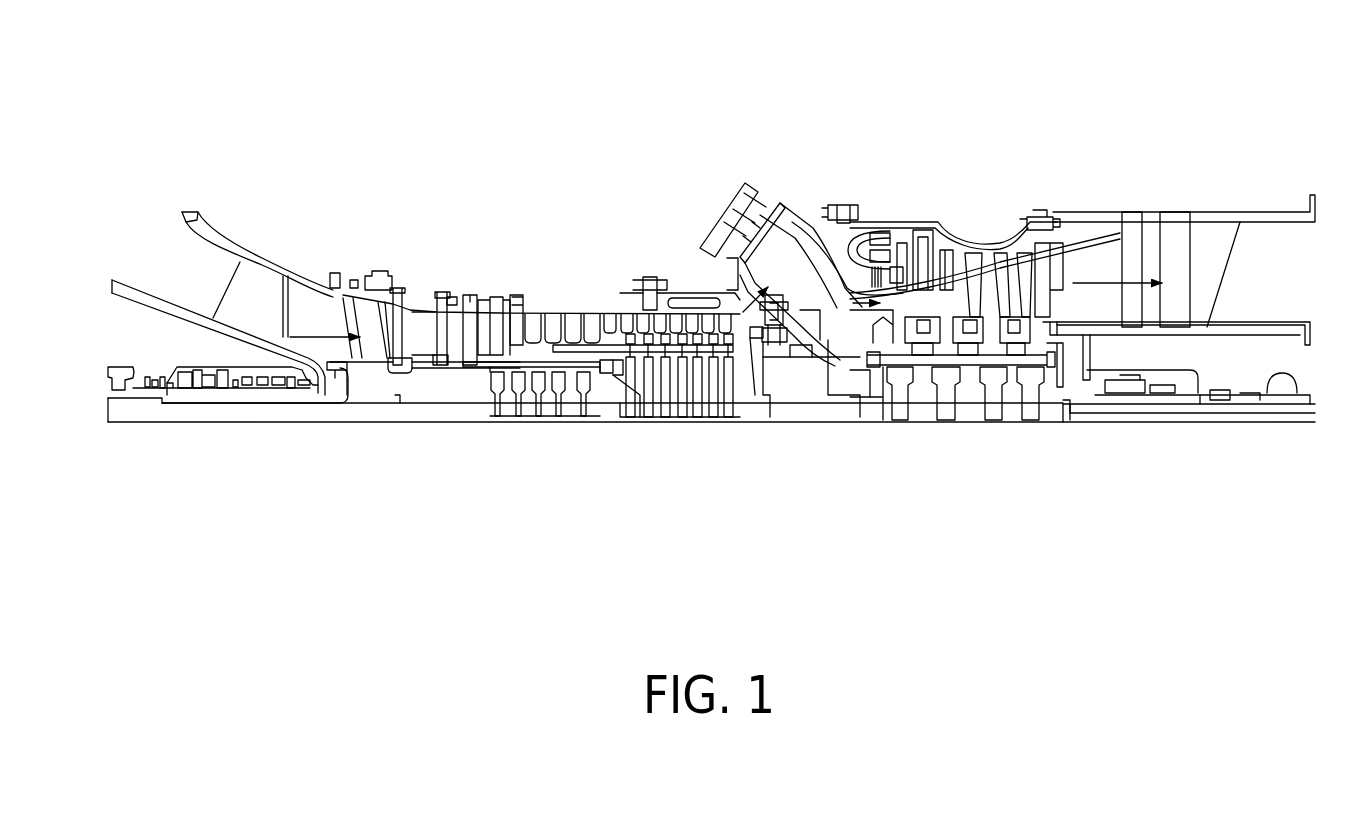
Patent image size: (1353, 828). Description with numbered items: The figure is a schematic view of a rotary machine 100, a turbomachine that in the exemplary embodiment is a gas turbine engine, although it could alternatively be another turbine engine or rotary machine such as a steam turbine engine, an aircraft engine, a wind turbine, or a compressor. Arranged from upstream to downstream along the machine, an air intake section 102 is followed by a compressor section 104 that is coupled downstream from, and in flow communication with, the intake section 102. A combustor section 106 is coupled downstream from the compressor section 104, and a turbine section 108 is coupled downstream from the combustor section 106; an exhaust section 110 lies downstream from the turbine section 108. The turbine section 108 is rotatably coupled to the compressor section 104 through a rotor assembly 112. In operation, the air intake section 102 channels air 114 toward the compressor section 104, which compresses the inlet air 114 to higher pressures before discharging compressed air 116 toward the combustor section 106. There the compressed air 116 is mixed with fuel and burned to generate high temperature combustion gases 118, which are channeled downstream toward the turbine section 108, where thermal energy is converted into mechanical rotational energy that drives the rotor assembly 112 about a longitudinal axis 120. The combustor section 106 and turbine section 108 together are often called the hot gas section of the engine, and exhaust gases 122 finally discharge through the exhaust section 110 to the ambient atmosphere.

The rotary machine 100 is at (974, 110).
The air intake section 102 is at (190, 212).
The compressor section 104 is at (668, 422).
The combustor section 106 is at (778, 197).
The turbine section 108 is at (940, 368).
The exhaust section 110 is at (1215, 208).
The rotor assembly 112 is at (402, 422).
The air 114 is at (312, 315).
The compressed air 116 is at (742, 313).
The combustion gases 118 is at (847, 232).
The longitudinal axis 120 is at (1230, 422).
The exhaust gases 122 is at (1100, 275).